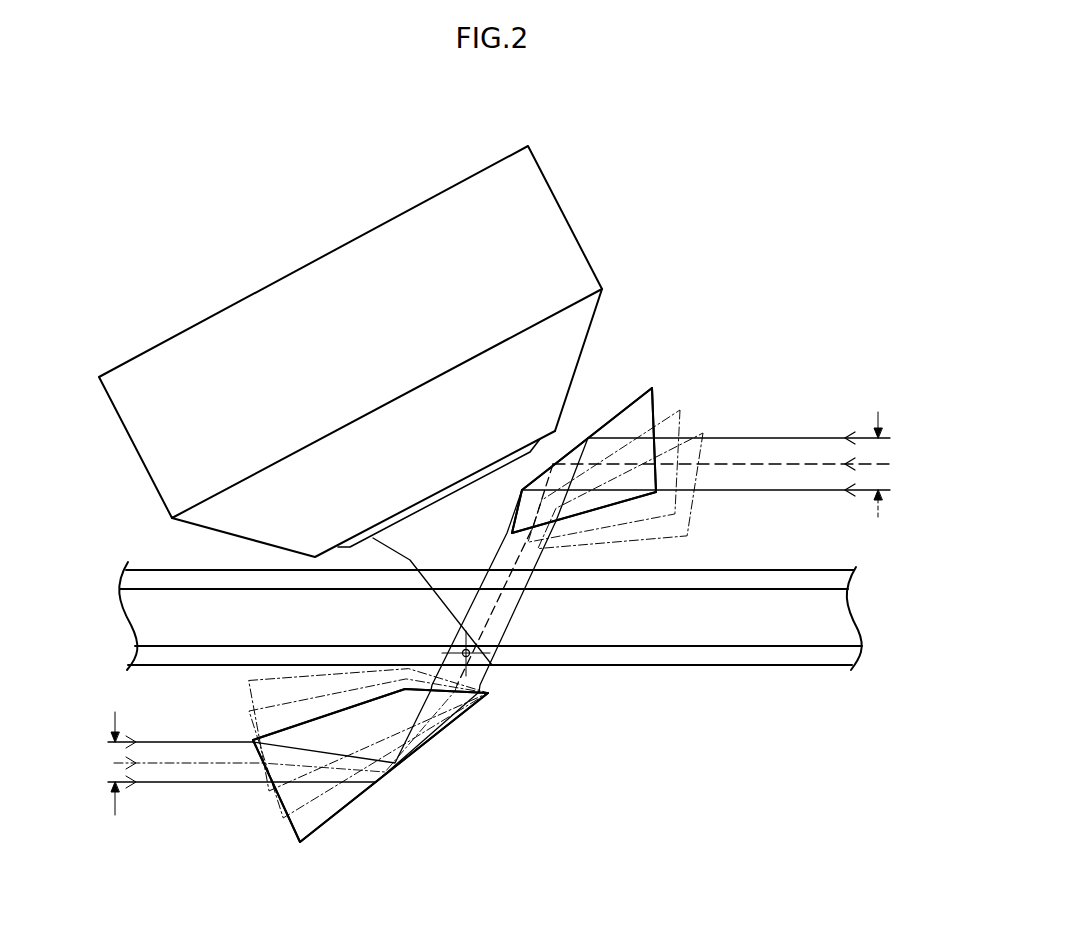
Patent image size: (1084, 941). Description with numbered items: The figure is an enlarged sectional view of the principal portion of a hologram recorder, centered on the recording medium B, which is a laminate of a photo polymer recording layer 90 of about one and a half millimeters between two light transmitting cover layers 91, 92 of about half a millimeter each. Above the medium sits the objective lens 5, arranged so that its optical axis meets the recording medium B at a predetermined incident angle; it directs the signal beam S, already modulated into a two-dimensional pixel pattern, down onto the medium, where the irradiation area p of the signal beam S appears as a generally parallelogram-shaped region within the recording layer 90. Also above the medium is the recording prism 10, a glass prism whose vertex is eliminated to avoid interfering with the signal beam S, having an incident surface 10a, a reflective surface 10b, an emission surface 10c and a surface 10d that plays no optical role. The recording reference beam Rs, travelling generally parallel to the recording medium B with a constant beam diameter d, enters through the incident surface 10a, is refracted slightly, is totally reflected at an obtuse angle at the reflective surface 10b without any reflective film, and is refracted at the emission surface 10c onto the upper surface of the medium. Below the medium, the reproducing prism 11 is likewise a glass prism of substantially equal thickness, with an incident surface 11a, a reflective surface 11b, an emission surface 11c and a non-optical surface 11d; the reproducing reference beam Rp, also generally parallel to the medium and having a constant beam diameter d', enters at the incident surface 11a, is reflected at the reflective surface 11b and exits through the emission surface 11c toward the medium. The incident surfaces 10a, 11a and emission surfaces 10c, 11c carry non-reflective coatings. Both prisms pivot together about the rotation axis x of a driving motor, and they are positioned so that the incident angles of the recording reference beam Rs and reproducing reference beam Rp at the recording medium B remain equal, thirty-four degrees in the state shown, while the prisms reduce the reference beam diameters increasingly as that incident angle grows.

The objective lens 5 is at (572, 228).
The signal beam S is at (458, 527).
The irradiation area p is at (543, 630).
The recording medium B is at (512, 662).
The recording layer 90 is at (850, 608).
The cover layer 91 is at (846, 584).
The cover layer 92 is at (858, 650).
The recording prism 10 is at (653, 388).
The incident surface 10a is at (658, 400).
The reflective surface 10b is at (612, 420).
The emission surface 10c is at (612, 507).
The surface 10d is at (517, 490).
The recording reference beam Rs is at (765, 437).
The beam diameter d is at (878, 454).
The rotation axis x is at (471, 657).
The reproducing prism 11 is at (299, 846).
The incident surface 11a is at (286, 822).
The reflective surface 11b is at (355, 795).
The emission surface 11c is at (488, 694).
The surface 11d is at (292, 723).
The reproducing reference beam Rp is at (172, 785).
The beam diameter d' is at (113, 753).